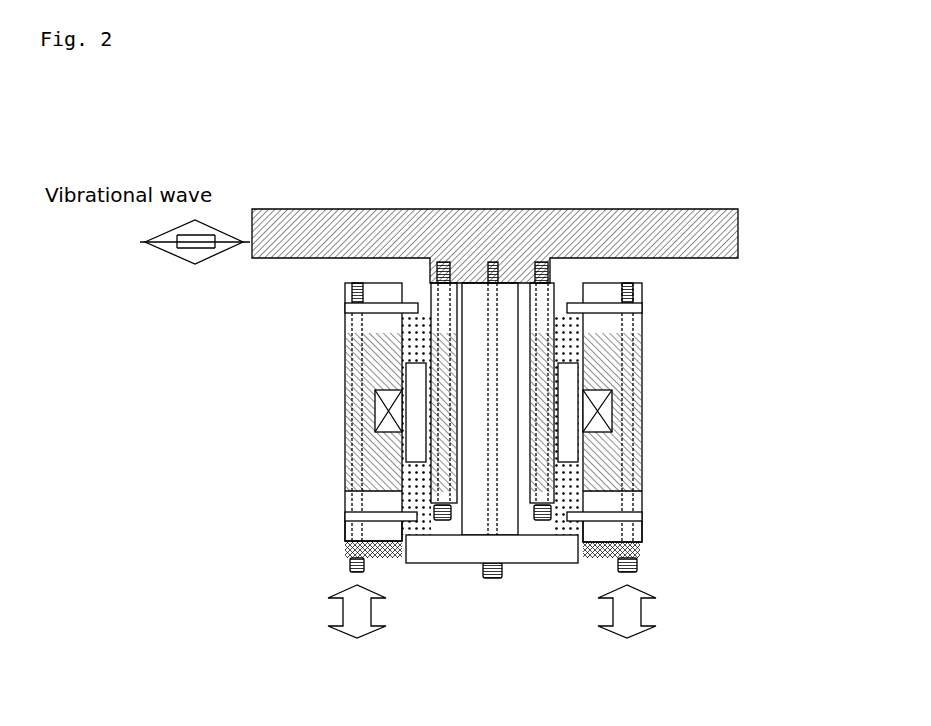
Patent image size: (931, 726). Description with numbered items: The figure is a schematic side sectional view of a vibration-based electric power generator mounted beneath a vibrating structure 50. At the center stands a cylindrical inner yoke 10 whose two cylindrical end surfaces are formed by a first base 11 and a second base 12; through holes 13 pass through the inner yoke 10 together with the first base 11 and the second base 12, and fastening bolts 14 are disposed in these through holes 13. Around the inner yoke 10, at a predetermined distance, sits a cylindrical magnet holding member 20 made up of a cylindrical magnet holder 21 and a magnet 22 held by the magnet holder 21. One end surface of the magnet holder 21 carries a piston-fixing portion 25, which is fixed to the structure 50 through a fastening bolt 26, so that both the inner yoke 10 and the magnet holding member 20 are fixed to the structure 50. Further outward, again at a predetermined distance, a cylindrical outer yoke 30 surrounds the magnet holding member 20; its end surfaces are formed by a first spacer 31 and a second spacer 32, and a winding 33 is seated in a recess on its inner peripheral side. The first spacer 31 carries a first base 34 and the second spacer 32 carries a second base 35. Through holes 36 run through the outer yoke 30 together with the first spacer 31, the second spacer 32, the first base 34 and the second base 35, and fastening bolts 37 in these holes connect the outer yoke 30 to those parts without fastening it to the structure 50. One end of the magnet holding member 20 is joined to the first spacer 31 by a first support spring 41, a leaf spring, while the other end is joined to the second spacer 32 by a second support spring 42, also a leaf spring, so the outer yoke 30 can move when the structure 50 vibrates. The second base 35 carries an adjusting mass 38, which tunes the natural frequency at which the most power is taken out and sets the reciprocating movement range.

The inner yoke 10 is at (465, 380).
The first base 11 is at (583, 293).
The second base 12 is at (583, 498).
The through holes 13 is at (515, 380).
The fastening bolts 14 is at (553, 507).
The magnet holding member 20 is at (631, 304).
The magnet holder 21 is at (575, 348).
The magnet 22 is at (572, 378).
The piston-fixing portion 25 is at (442, 548).
The fastening bolt 26 is at (495, 578).
The outer yoke 30 is at (507, 440).
The first spacer 31 is at (345, 323).
The second spacer 32 is at (345, 497).
The winding 33 is at (382, 410).
The first base 34 is at (345, 293).
The second base 35 is at (345, 532).
The through holes 36 is at (352, 432).
The fastening bolts 37 is at (345, 566).
The adjusting mass 38 is at (370, 552).
The first support spring 41 is at (345, 313).
The second support spring 42 is at (345, 516).
The structure 50 is at (713, 209).